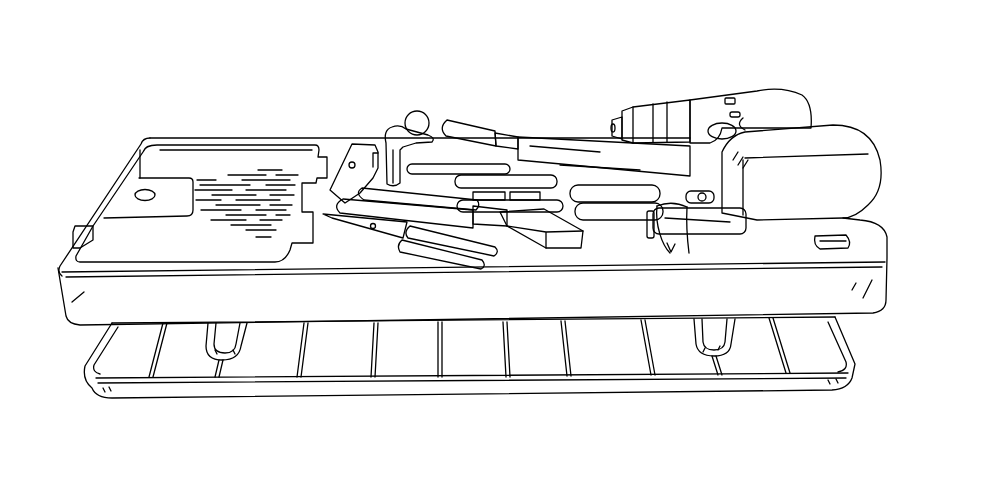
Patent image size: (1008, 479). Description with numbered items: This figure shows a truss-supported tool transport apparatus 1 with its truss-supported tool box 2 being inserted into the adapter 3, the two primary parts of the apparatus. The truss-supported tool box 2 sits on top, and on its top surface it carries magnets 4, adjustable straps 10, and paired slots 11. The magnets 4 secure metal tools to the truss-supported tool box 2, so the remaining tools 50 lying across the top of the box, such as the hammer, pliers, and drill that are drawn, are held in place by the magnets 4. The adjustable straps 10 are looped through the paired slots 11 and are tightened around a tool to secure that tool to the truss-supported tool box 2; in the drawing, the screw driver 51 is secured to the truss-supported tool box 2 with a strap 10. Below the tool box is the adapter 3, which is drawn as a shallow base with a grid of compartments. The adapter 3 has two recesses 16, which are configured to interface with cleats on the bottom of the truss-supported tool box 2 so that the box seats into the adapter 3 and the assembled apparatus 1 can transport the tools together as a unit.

The truss-supported tool transport apparatus 1 is at (100, 146).
The truss-supported tool box 2 is at (83, 296).
The adapter 3 is at (127, 390).
The magnets 4 is at (440, 166).
The straps 10 is at (680, 247).
The paired slots 11 is at (818, 240).
The recesses 16 is at (228, 337).
The tools 50 is at (363, 147).
The screw driver 51 is at (727, 226).